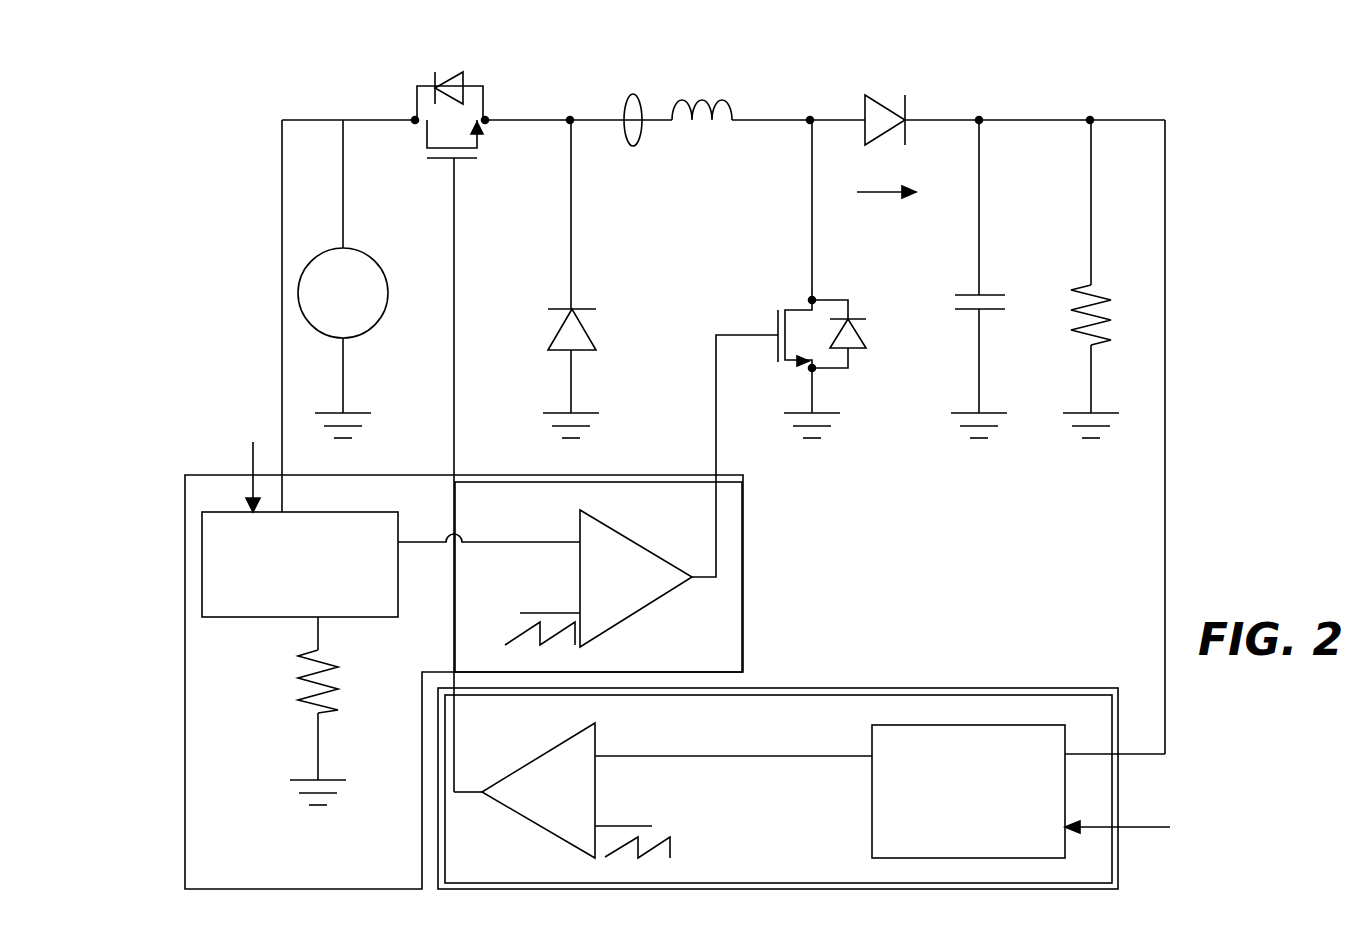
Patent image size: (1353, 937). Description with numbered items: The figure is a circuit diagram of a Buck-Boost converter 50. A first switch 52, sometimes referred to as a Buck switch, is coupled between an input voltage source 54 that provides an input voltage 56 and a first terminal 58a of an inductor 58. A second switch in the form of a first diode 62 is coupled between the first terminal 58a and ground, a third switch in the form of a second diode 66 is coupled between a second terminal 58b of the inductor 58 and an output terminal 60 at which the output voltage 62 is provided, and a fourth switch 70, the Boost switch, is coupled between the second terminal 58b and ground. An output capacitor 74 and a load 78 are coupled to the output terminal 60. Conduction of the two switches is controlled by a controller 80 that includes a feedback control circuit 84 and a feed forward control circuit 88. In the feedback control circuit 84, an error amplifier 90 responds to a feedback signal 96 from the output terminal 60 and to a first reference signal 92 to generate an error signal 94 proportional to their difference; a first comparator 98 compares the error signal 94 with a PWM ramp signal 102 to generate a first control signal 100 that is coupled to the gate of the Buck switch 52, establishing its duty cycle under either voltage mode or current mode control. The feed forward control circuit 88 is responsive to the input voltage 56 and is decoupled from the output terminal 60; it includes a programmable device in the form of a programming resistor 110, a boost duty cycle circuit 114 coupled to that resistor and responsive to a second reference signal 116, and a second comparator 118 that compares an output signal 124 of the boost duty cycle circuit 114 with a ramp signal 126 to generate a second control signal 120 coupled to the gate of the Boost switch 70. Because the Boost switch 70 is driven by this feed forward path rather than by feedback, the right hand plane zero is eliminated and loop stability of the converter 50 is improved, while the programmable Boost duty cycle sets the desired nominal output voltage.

The Buck-Boost converter 50 is at (1222, 207).
The first switch Q1 52 is at (470, 68).
The input voltage source 54 is at (360, 256).
The input voltage Vin 56 is at (330, 102).
The inductor 58 is at (730, 92).
The first terminal of the inductor 58a is at (545, 160).
The second terminal of the inductor 58b is at (785, 160).
The output terminal 60 is at (979, 118).
The second switch / diode D1 (also output voltage Vout) 62 is at (560, 330).
The third switch / diode D2 66 is at (888, 129).
The fourth switch Q2 70 is at (863, 279).
The output capacitor Co 74 is at (962, 295).
The load Ro 78 is at (1085, 285).
The controller 80 is at (853, 688).
The feedback control circuit 84 is at (490, 871).
The feed forward control circuit 88 is at (331, 871).
The error amplifier 90 is at (954, 829).
The reference signal Vref 92 is at (1140, 826).
The error signal Vc 94 is at (782, 758).
The feedback signal 96 is at (1163, 600).
The comparator 98 is at (559, 807).
The control signal 100 is at (452, 398).
The PWM ramp signal 102 is at (630, 826).
The programmable device / resistor Rprogram 110 is at (308, 702).
The boost duty cycle circuit 114 is at (283, 605).
The reference signal Vref 116 is at (250, 500).
The comparator 118 is at (640, 591).
The control signal 120 is at (716, 430).
The output signal of the boost duty cycle circuit 124 is at (542, 540).
The ramp signal 126 is at (552, 612).